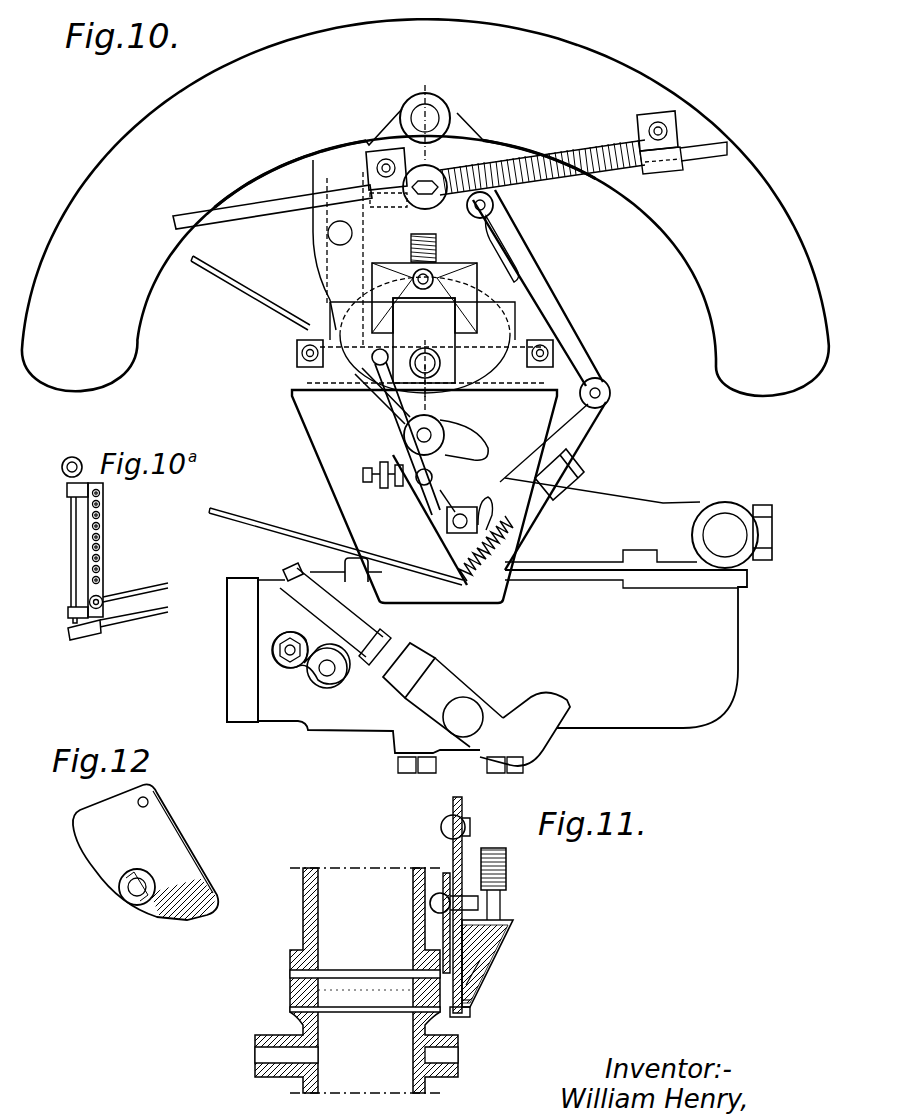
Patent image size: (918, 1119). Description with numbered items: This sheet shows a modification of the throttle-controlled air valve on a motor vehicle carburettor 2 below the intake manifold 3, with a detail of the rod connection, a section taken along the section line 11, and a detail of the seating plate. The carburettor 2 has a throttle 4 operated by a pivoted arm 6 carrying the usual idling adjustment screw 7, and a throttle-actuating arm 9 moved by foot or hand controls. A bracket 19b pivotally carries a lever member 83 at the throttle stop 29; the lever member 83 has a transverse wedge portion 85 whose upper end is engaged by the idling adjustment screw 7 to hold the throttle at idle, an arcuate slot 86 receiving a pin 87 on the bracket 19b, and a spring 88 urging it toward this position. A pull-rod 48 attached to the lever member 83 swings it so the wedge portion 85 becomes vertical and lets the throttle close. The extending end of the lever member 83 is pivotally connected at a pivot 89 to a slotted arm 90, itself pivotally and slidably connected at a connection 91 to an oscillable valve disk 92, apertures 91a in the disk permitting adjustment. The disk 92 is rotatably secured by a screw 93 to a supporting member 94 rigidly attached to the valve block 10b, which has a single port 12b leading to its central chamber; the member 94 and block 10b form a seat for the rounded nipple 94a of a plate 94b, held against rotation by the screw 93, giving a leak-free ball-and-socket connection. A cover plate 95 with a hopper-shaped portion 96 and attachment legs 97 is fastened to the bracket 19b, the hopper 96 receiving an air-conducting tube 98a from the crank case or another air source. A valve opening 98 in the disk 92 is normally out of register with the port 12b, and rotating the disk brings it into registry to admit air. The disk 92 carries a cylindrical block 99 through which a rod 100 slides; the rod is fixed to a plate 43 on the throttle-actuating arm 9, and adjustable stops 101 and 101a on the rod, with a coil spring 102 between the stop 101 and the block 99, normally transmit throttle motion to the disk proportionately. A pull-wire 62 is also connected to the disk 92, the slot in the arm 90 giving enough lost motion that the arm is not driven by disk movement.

In FIG. 10, the carburettor 2 is at (650, 500).
In FIG. 10, the intake manifold 3 is at (602, 60).
In FIG. 10, the throttle 4 is at (452, 437).
In FIG. 10, the pivoted arm 6 is at (393, 406).
In FIG. 10, the idling adjustment screw 7 is at (368, 466).
In FIG. 10A, the throttle-actuating arm 9 is at (68, 545).
In FIG. 10, the section line 11 is at (458, 80).
In FIG. 10, the throttle stop 29 is at (417, 477).
In FIG. 10A, the plate 43 is at (105, 548).
In FIG. 10, the pull-rod 48 is at (243, 502).
In FIG. 10, the pull-wire 62 is at (240, 288).
In FIG. 10, the lever member 83 is at (440, 490).
In FIG. 10, the wedge portion 85 is at (440, 527).
In FIG. 10, the arcuate slot 86 is at (483, 505).
In FIG. 10, the pin 87 is at (460, 513).
In FIG. 10, the spring 88 is at (513, 540).
In FIG. 10, the pivotal connection 89 is at (600, 378).
In FIG. 10, the slotted arm 90 is at (545, 294).
In FIG. 10, the pivotal and slidable connection 91 is at (493, 204).
In FIG. 10, the apertures 91a is at (515, 232).
In FIG. 10, the oscillable valve disk 92 is at (314, 273).
In FIG. 11, the oscillable valve disk 92 is at (453, 843).
In FIG. 10, the screw 93 is at (433, 277).
In FIG. 11, the screw 93 is at (430, 898).
In FIG. 11, the supporting member 94 is at (443, 932).
In FIG. 10, the rounded nipple 94a is at (413, 345).
In FIG. 12, the rounded nipple 94a is at (132, 902).
In FIG. 11, the rounded nipple 94a is at (470, 975).
In FIG. 10, the plate 94b is at (410, 287).
In FIG. 12, the plate 94b is at (145, 852).
In FIG. 11, the plate 94b is at (458, 1017).
In FIG. 10, the cover plate 95 is at (297, 373).
In FIG. 11, the hopper-shaped portion 96 is at (472, 993).
In FIG. 10, the attachment legs 97 is at (300, 385).
In FIG. 10, the valve opening 98 is at (442, 358).
In FIG. 11, the valve opening 98 is at (472, 998).
In FIG. 11, the air-conducting tube 98a is at (510, 860).
In FIG. 10, the cylindrical block 99 is at (433, 177).
In FIG. 10, the rod 100 is at (267, 212).
In FIG. 10A, the rod 100 is at (140, 590).
In FIG. 10, the adjustable stop 101 is at (640, 140).
In FIG. 10, the adjustable stop 101a is at (377, 153).
In FIG. 10, the coil spring 102 is at (570, 157).
In FIG. 11, the valve block 10b is at (290, 989).
In FIG. 11, the port 12b is at (420, 990).
In FIG. 10, the bracket 19b is at (338, 483).